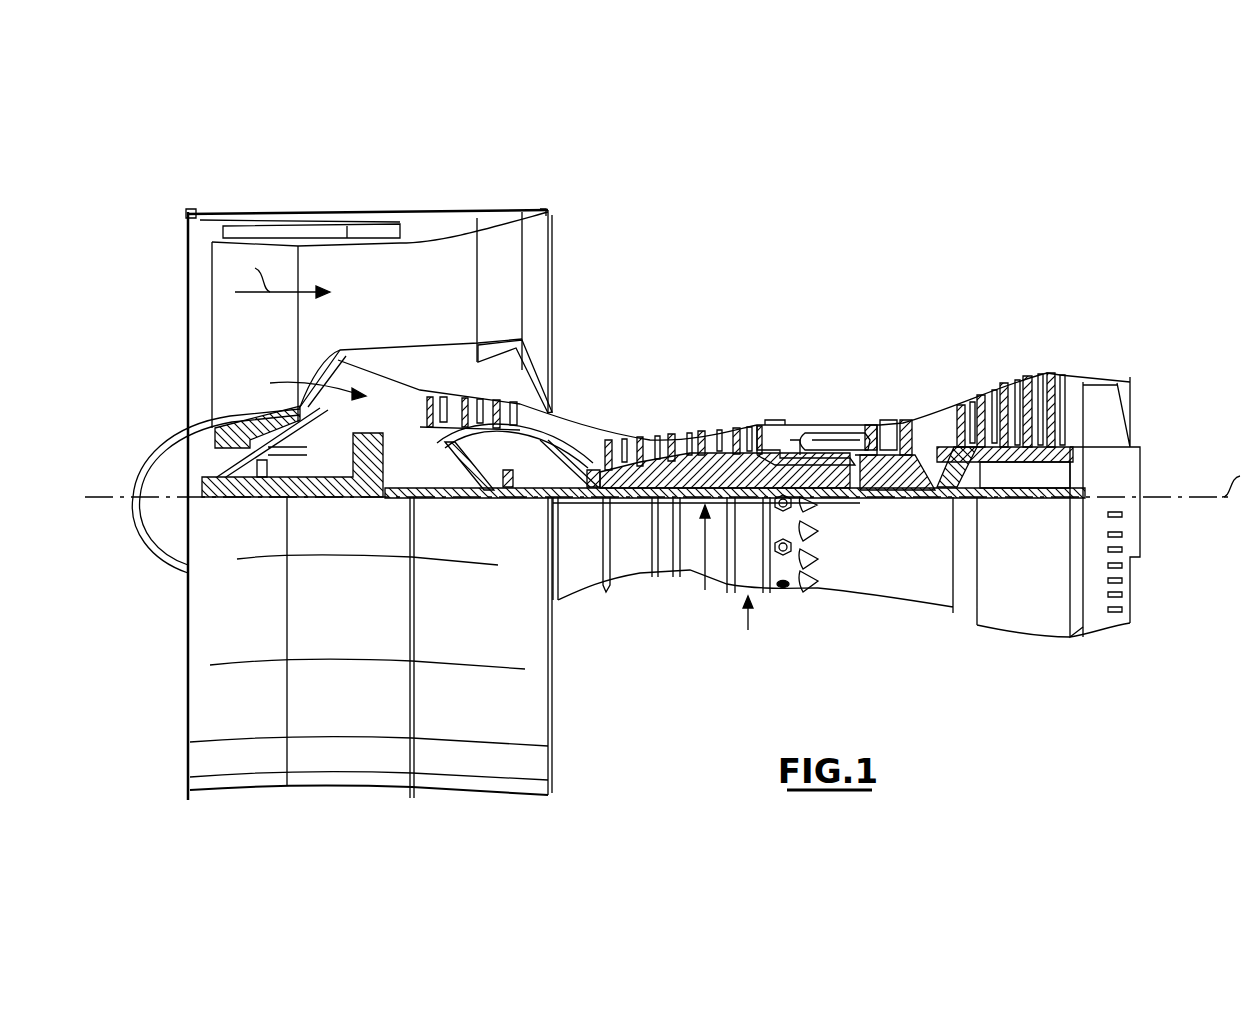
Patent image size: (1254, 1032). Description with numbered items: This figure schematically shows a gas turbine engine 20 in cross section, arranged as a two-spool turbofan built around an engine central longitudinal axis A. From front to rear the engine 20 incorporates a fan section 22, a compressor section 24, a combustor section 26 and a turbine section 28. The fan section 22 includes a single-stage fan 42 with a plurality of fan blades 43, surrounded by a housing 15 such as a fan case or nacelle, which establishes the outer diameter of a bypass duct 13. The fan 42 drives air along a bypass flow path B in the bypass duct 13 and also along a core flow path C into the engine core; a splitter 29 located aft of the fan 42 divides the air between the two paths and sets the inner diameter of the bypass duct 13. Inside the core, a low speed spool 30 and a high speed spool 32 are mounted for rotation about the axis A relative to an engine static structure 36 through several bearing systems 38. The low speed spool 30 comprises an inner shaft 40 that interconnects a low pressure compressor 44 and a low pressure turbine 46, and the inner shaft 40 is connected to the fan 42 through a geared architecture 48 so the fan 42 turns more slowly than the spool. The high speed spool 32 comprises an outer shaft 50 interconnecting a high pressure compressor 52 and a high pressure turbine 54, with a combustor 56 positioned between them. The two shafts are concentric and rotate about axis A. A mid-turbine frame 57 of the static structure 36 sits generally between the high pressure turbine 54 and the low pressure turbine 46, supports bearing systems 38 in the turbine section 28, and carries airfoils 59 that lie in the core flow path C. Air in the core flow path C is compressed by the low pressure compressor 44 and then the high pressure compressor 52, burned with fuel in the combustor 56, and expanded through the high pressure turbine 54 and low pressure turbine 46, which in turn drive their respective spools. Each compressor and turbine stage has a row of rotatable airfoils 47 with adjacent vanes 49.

The bypass duct 13 is at (420, 244).
The housing 15 is at (367, 222).
The gas turbine engine 20 is at (828, 268).
The fan section 22 is at (299, 212).
The compressor section 24 is at (599, 410).
The combustor section 26 is at (820, 398).
The turbine section 28 is at (968, 362).
The splitter 29 is at (350, 350).
The low speed spool 30 is at (706, 590).
The high speed spool 32 is at (752, 431).
The engine static structure 36 is at (748, 630).
The bearing systems 38 is at (505, 492).
The inner shaft 40 is at (563, 503).
The fan 42 is at (240, 347).
The fan blades 43 is at (313, 341).
The low pressure compressor 44 is at (470, 392).
The low pressure turbine 46 is at (1000, 386).
The rotatable airfoils 47 is at (429, 396).
The geared architecture 48 is at (373, 490).
The vanes 49 is at (448, 400).
The outer shaft 50 is at (835, 492).
The high pressure compressor 52 is at (692, 436).
The high pressure turbine 54 is at (905, 419).
The combustor 56 is at (826, 440).
The mid-turbine frame 57 is at (930, 407).
The airfoils 59 is at (940, 457).
The engine central longitudinal axis A is at (1237, 480).
The bypass flow path B is at (282, 276).
The core flow path C is at (307, 384).